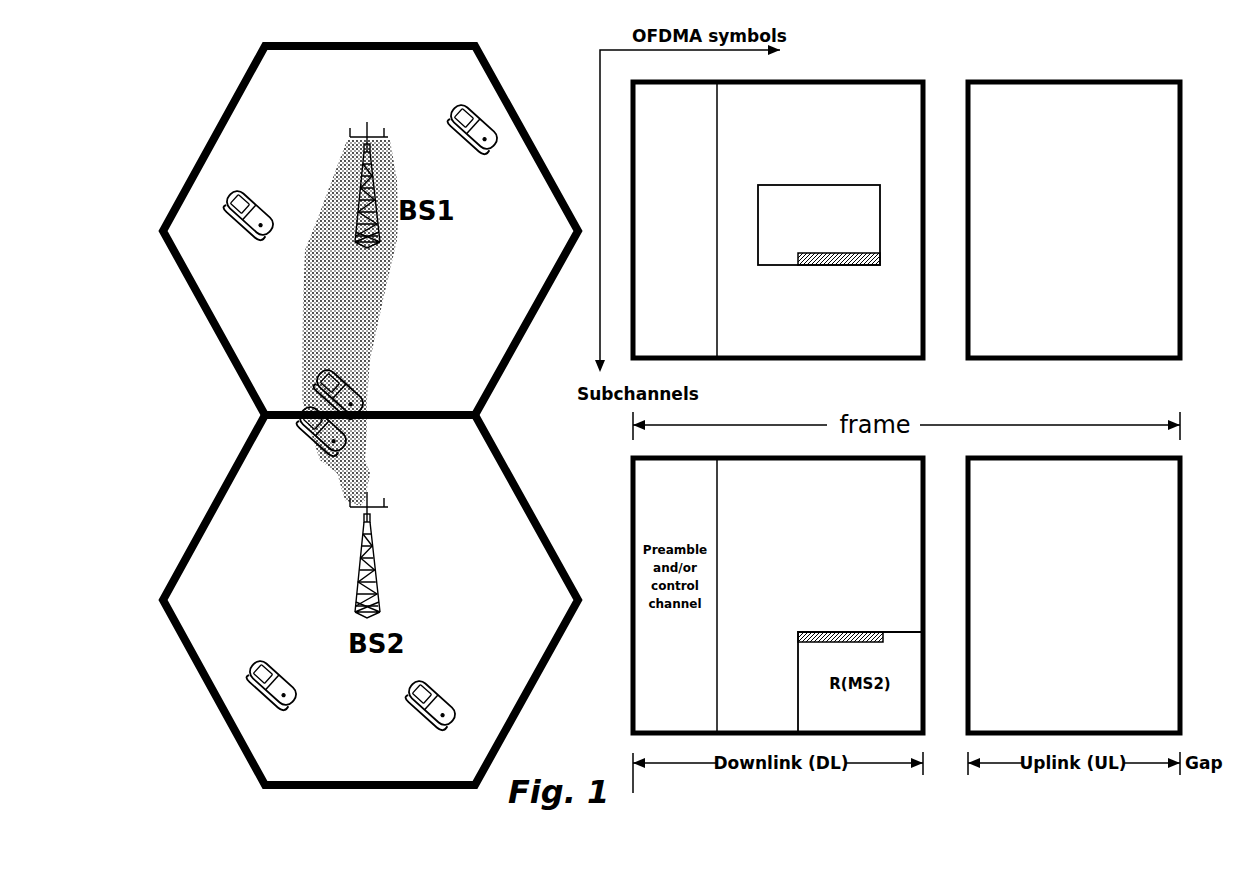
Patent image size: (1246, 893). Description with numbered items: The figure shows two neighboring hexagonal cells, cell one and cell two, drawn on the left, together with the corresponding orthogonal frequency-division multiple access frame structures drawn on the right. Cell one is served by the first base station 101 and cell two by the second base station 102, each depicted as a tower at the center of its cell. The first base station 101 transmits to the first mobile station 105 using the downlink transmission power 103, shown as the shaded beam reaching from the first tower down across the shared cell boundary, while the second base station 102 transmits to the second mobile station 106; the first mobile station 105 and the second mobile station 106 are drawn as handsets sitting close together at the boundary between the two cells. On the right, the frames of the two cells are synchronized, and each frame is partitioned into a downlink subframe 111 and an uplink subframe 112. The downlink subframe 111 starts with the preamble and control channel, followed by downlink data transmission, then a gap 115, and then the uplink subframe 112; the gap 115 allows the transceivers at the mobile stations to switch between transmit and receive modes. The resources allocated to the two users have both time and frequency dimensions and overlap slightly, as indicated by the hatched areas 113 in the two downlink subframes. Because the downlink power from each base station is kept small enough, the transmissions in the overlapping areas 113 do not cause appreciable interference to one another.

The BS1 101 is at (512, 107).
The BS2 102 is at (514, 485).
The downlink transmission power P(MS1) 103 is at (383, 313).
The MS1 105 is at (363, 397).
The MS2 106 is at (310, 432).
The downlink subframe 111 is at (818, 78).
The uplink subframe 112 is at (1137, 87).
The hatched areas 113 is at (833, 268).
The gap 115 is at (943, 753).